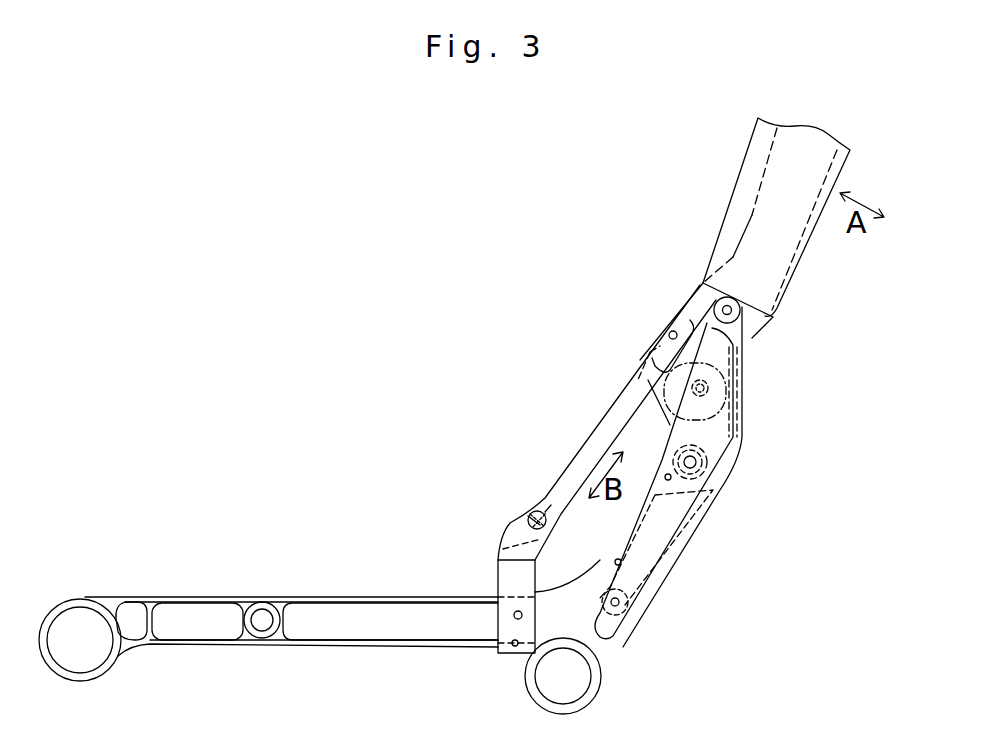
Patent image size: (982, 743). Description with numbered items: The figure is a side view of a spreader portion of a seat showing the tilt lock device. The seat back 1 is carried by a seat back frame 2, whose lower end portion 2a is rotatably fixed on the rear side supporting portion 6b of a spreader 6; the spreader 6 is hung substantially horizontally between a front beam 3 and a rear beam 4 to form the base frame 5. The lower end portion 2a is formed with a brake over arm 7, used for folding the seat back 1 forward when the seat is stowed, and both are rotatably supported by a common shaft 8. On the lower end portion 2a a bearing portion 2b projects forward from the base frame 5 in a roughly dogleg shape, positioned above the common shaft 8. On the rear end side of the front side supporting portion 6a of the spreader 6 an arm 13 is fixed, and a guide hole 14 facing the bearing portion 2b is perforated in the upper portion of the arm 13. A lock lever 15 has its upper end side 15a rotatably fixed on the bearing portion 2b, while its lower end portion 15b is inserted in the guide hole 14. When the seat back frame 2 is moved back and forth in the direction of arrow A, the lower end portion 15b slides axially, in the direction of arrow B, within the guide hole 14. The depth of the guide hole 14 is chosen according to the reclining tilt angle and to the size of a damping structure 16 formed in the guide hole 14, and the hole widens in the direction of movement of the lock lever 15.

The seat back 1 is at (745, 162).
The seat back frame 2 is at (752, 217).
The lower end portion 2a is at (727, 445).
The bearing portion 2b is at (688, 306).
The front beam 3 is at (80, 615).
The rear beam 4 is at (575, 678).
The base frame 5 is at (409, 540).
The spreader 6 is at (262, 602).
The front side supporting portion 6a is at (152, 602).
The rear side supporting portion 6b is at (745, 358).
The brake over arm 7 is at (680, 537).
The common shaft 8 is at (697, 463).
The arm 13 is at (523, 540).
The guide hole 14 is at (550, 507).
The lock lever 15 is at (571, 395).
The upper end side 15a is at (675, 325).
The lower end portion 15b is at (518, 535).
The damping structure 16 is at (540, 500).